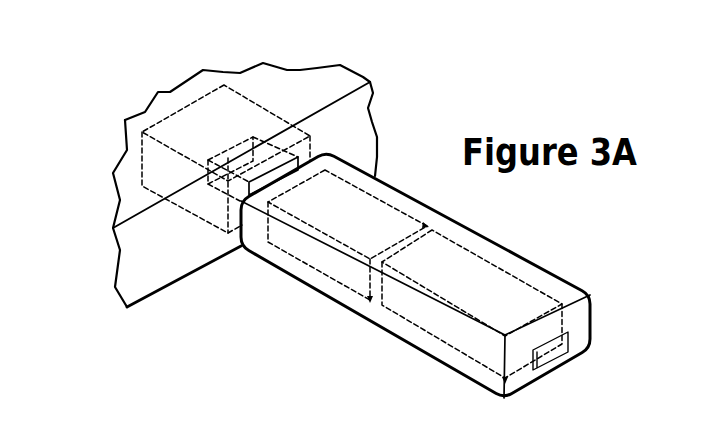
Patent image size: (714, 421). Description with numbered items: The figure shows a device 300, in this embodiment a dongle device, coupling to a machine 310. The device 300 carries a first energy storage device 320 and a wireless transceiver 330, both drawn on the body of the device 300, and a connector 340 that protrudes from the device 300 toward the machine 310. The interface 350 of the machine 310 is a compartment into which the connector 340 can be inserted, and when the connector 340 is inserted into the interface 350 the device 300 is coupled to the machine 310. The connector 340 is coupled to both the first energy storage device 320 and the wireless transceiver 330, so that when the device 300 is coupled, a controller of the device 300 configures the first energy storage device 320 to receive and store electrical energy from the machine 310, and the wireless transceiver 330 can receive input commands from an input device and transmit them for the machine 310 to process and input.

The device 300 is at (364, 326).
The machine 310 is at (290, 68).
The first energy storage device 320 is at (512, 262).
The wireless transceiver 330 is at (393, 195).
The connector 340 is at (228, 150).
The interface 350 is at (238, 92).